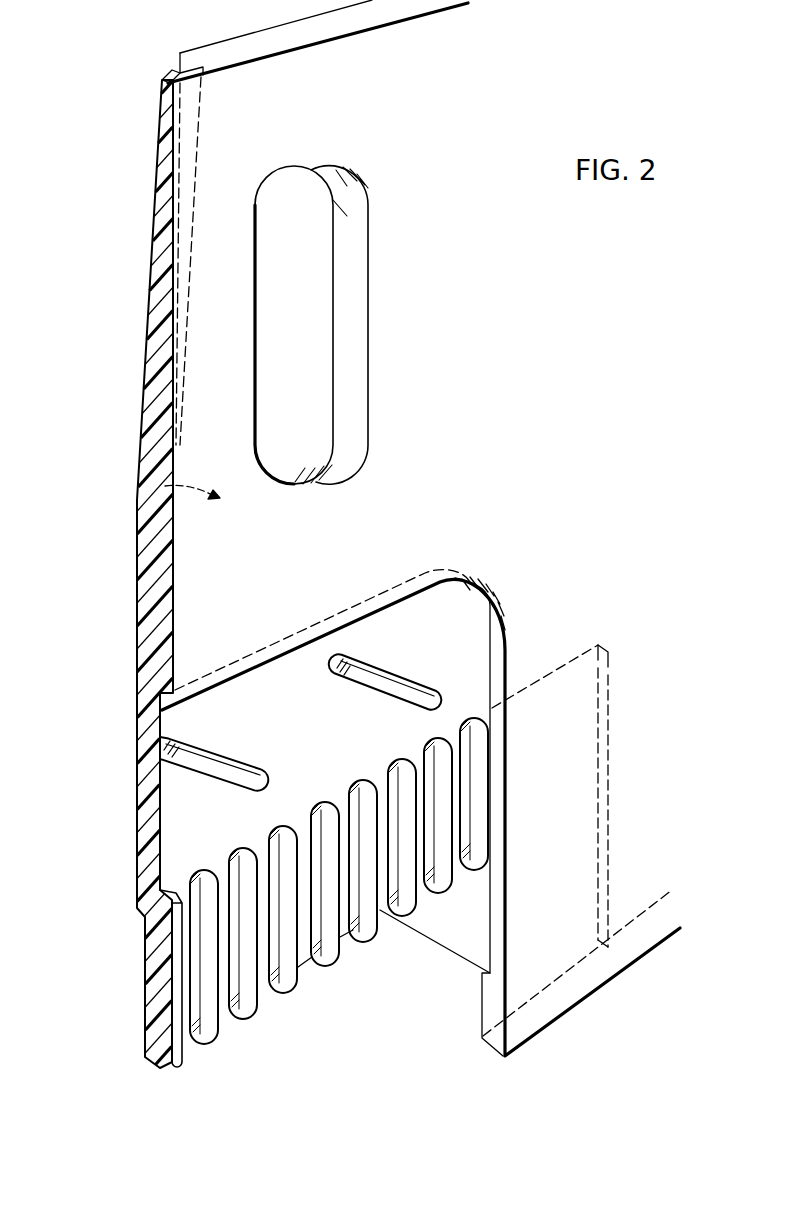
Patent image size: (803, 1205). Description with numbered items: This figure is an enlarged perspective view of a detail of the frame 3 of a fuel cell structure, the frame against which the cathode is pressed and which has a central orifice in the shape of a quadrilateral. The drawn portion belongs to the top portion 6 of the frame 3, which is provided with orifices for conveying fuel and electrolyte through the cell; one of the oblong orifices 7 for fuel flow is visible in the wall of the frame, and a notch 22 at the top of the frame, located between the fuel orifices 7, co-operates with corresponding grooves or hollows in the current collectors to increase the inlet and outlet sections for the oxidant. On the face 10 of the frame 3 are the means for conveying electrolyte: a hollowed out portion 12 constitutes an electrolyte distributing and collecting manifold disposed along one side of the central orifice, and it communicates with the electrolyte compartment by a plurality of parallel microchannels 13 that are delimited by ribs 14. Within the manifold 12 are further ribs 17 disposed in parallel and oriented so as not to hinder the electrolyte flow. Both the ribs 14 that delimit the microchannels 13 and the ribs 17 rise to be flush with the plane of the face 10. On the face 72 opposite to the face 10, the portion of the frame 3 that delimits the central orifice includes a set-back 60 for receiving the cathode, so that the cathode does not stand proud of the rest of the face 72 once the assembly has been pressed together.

The frame 3 is at (287, 45).
The notches 22 is at (197, 150).
The top portion 6 is at (300, 110).
The orifices for fuel flow 7 is at (273, 410).
The face 72 is at (157, 486).
The face 10 is at (214, 513).
The ribs 17 is at (393, 687).
The hollowed out portions 12 is at (447, 628).
The microchannels 13 is at (267, 853).
The ribs 14 is at (180, 1062).
The set-back 60 is at (535, 1000).